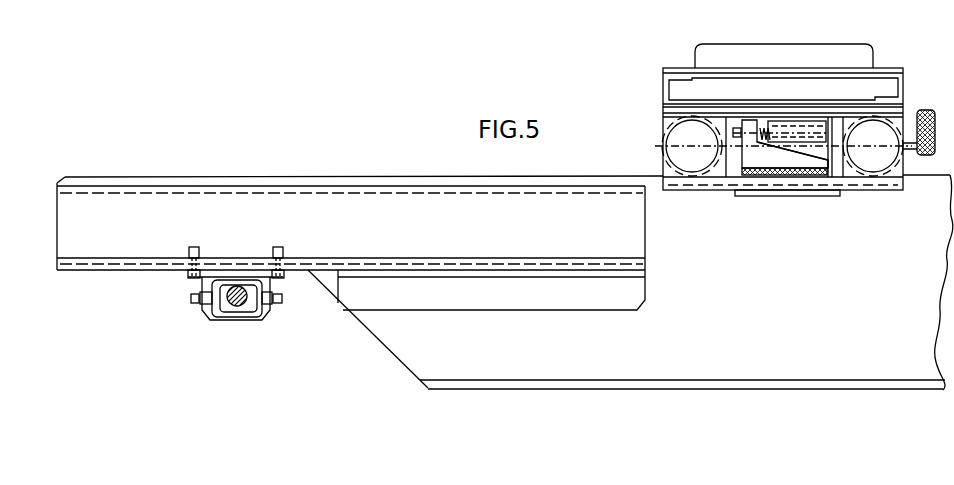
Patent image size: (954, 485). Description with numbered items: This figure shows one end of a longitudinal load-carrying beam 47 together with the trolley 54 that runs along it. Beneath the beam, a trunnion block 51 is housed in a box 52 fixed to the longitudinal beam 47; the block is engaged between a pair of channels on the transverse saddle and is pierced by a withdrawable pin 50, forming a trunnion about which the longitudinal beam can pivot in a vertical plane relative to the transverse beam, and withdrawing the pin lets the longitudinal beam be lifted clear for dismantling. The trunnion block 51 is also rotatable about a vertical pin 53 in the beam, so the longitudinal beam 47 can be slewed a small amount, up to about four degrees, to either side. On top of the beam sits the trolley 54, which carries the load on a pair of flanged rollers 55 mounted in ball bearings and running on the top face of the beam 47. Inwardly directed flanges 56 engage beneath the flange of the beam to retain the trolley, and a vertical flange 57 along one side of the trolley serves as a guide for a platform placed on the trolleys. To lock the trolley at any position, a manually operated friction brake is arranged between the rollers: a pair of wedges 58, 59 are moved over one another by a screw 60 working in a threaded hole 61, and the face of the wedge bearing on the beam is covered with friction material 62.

The longitudinal load-carrying beam 47 is at (694, 268).
The withdrawable pin 50 is at (237, 306).
The trunnion block 51 is at (222, 300).
The box 52 is at (254, 318).
The vertical pin 53 is at (237, 279).
The trolley 54 is at (877, 78).
The flanged rollers 55 is at (670, 146).
The inwardly directed flanges 56 is at (836, 194).
The vertical flange 57 is at (762, 52).
The wedge 58 is at (822, 155).
The wedge 59 is at (750, 172).
The screw 60 is at (800, 127).
The threaded hole 61 is at (750, 127).
The friction material 62 is at (783, 172).